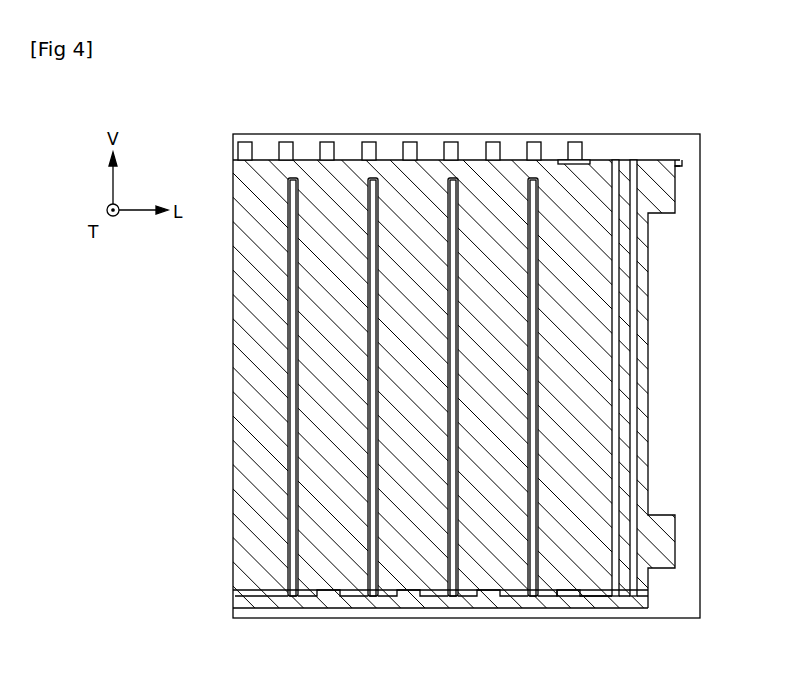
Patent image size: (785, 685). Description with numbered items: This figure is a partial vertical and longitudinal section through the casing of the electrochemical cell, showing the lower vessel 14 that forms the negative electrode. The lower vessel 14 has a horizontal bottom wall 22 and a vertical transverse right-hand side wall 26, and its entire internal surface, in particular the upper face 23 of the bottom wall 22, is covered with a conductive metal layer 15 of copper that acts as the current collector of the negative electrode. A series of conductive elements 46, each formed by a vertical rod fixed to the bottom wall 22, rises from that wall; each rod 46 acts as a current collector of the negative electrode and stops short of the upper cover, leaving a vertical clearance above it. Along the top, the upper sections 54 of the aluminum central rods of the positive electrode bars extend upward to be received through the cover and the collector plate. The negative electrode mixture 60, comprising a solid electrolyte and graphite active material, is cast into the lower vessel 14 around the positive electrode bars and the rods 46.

The lower vessel 14 is at (230, 571).
The conductive metal layer 15 is at (637, 287).
The bottom wall 22 is at (534, 590).
The upper face of the bottom wall 23 is at (580, 578).
The right-hand side wall 26 is at (650, 300).
The conductive elements 46 is at (365, 390).
The upper section of the central hub 54 is at (366, 142).
The negative electrode mixture 60 is at (320, 296).